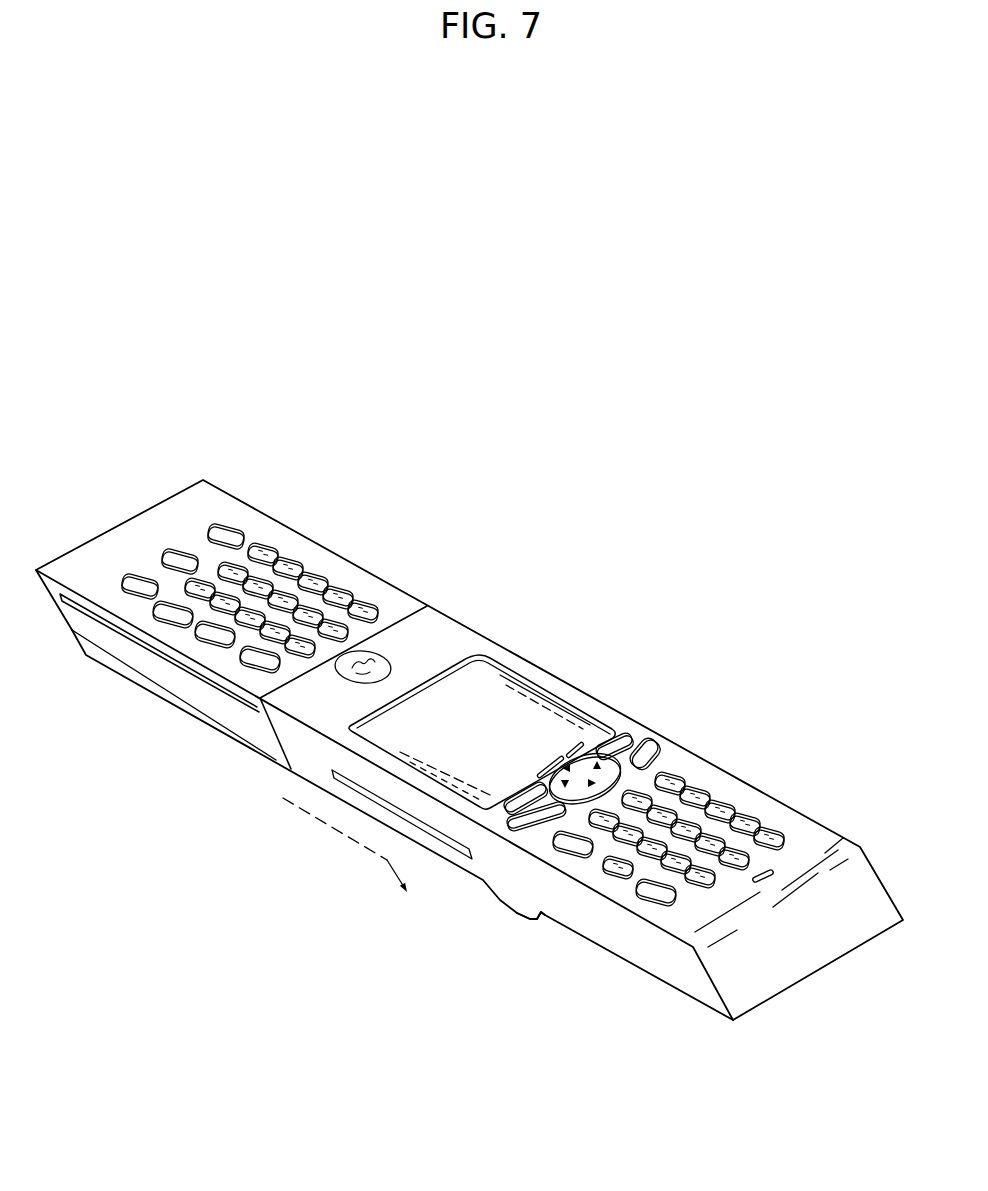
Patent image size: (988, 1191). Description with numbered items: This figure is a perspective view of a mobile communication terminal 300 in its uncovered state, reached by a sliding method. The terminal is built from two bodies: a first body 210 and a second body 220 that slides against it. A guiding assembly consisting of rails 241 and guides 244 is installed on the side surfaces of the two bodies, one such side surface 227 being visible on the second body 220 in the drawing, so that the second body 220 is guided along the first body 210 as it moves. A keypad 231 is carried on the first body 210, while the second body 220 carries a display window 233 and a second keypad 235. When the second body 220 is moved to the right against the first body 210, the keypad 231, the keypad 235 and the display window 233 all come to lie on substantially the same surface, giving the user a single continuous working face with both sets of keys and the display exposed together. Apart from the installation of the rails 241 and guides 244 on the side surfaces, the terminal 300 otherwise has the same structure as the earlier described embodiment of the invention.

The mobile communication terminal 300 is at (648, 580).
The first body 210 is at (212, 730).
The second body 220 is at (680, 737).
The side surface 227 is at (650, 952).
The keypad 231 is at (340, 586).
The display window 233 is at (483, 683).
The keypad 235 is at (745, 813).
The rail 241 is at (162, 658).
The guide 244 is at (518, 916).